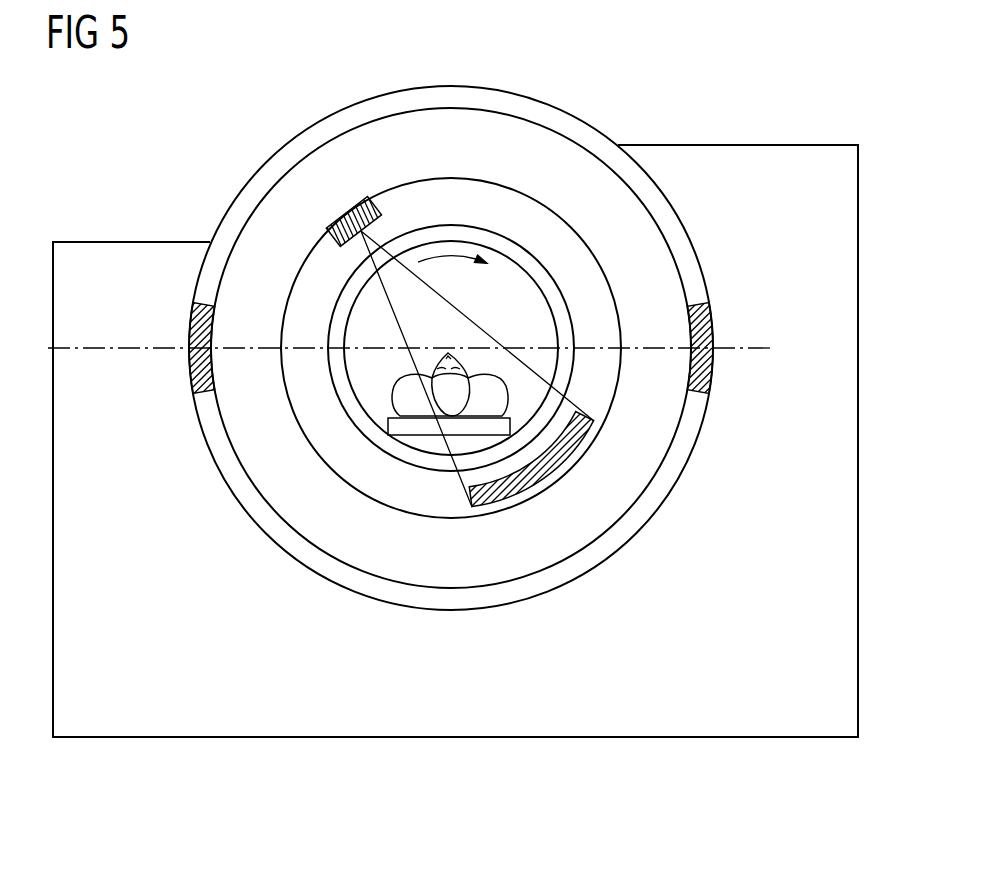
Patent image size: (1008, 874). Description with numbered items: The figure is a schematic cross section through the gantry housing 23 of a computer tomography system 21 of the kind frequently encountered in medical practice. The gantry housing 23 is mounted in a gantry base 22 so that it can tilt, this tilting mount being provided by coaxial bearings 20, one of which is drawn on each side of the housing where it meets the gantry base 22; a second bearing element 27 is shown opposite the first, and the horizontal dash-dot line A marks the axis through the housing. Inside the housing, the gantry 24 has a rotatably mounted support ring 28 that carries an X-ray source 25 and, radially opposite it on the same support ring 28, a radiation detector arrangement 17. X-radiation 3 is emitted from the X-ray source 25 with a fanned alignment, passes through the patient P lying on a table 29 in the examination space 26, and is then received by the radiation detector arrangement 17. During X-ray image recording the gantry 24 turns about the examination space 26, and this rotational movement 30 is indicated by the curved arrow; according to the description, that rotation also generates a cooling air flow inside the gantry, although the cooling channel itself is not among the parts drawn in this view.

The X-radiation 3 is at (475, 317).
The radiation detector arrangement 17 is at (560, 455).
The coaxial bearings 20 is at (190, 362).
The computer tomography system 21 is at (722, 88).
The gantry base 22 is at (848, 223).
The gantry housing 23 is at (491, 89).
The gantry 24 is at (315, 232).
The X-ray source 25 is at (355, 212).
The examination space 26 is at (540, 322).
The bearing / drive element 27 is at (707, 333).
The support ring 28 is at (335, 485).
The table 29 is at (420, 427).
The rotational movement 30 is at (452, 255).
The axis of rotation A is at (130, 347).
The patient P is at (407, 397).